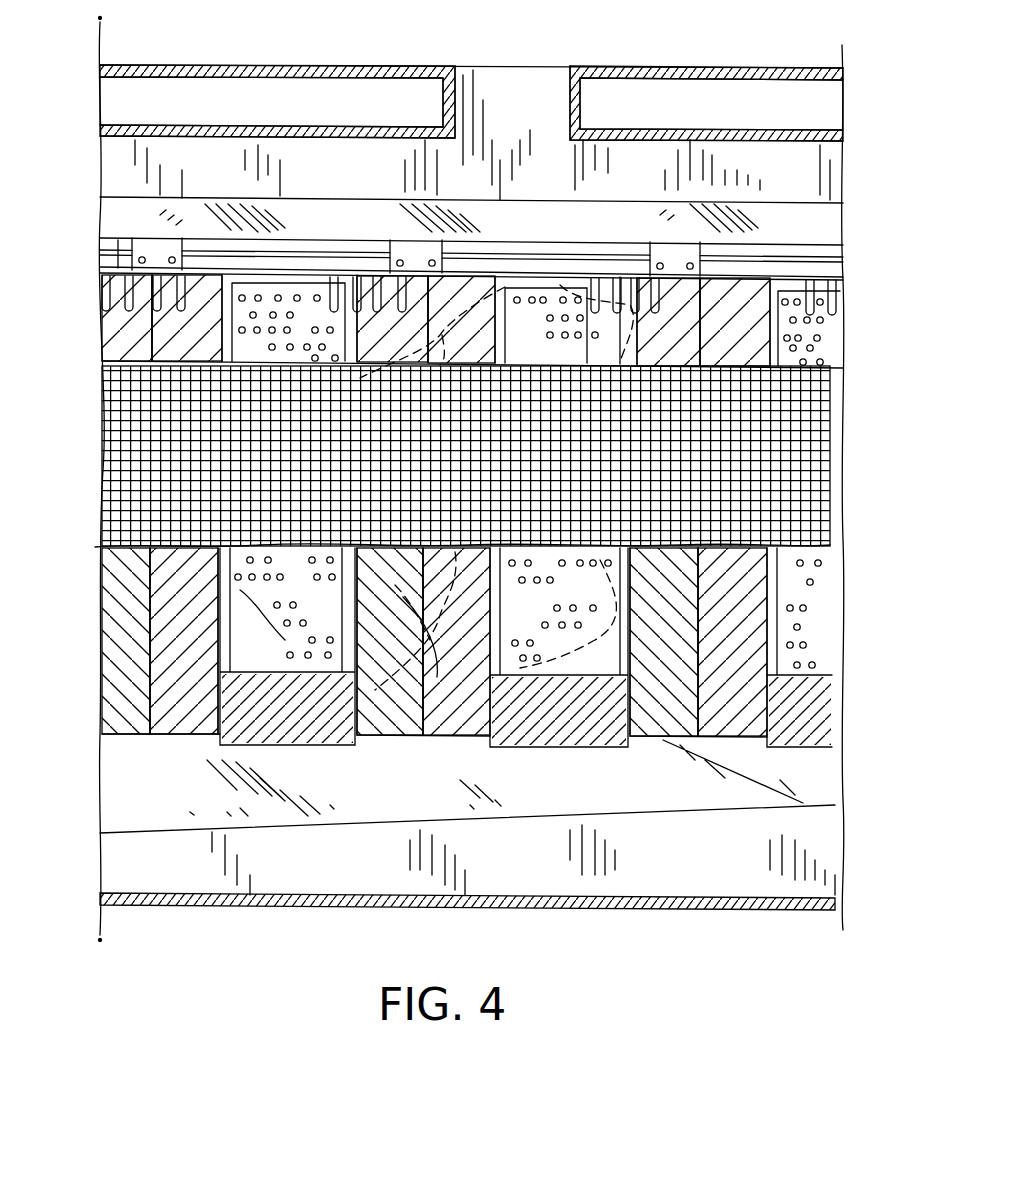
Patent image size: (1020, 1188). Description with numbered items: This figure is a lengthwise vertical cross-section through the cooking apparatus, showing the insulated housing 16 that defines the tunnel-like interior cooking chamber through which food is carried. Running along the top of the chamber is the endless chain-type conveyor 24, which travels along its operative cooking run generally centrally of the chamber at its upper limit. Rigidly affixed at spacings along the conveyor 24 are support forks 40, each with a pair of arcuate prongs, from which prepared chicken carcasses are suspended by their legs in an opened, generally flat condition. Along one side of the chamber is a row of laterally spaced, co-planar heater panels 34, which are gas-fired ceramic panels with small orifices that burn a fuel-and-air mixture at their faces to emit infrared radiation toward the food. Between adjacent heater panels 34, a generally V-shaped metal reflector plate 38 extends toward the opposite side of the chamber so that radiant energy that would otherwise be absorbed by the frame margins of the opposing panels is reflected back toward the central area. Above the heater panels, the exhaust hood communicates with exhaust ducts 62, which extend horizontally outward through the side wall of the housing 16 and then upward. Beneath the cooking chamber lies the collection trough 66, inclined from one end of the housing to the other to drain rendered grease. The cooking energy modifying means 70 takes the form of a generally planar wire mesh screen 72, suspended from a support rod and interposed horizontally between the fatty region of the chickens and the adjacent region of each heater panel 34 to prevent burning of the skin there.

The insulated housing 16 is at (685, 910).
The endless chain-type conveyor 24 is at (893, 243).
The heater panels 34 is at (260, 650).
The V-shaped metal reflector plate 38 is at (420, 720).
The support forks 40 is at (843, 318).
The exhaust duct 62 is at (363, 88).
The collection trough 66 is at (145, 830).
The cooking energy modifying means 70 is at (464, 539).
The wire mesh screen 72 is at (127, 500).